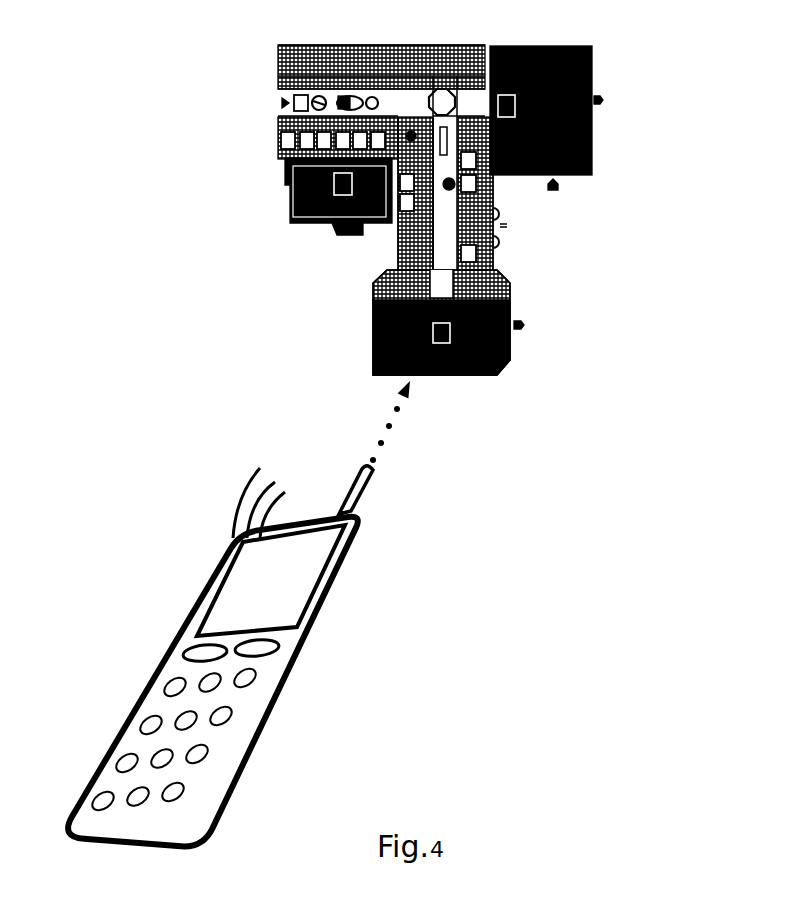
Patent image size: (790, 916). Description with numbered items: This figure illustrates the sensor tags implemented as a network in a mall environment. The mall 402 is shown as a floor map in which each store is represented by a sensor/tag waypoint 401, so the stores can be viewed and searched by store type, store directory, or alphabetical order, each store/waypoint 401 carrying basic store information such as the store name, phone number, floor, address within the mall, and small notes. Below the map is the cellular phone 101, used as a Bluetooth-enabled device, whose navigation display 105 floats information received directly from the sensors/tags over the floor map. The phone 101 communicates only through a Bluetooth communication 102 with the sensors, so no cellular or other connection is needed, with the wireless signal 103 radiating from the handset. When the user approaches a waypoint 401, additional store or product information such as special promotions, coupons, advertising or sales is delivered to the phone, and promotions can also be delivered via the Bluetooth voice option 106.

The cellular phone 101 is at (307, 670).
The Bluetooth communication 102 is at (385, 442).
The wireless signal 103 is at (232, 513).
The navigation display 105 is at (350, 577).
The Bluetooth voice option 106 is at (370, 508).
The sensor/tag waypoint 401 is at (277, 112).
The mall 402 is at (280, 187).